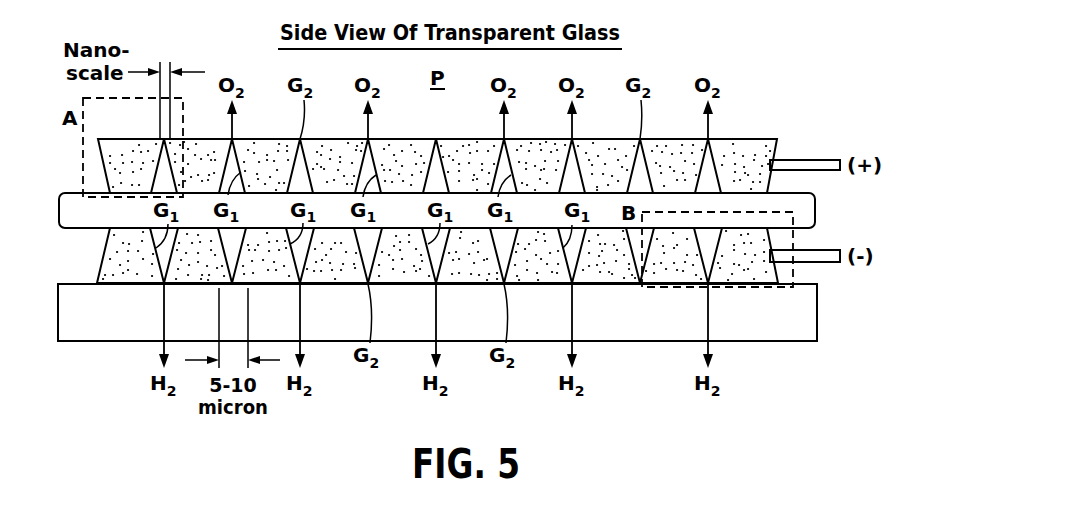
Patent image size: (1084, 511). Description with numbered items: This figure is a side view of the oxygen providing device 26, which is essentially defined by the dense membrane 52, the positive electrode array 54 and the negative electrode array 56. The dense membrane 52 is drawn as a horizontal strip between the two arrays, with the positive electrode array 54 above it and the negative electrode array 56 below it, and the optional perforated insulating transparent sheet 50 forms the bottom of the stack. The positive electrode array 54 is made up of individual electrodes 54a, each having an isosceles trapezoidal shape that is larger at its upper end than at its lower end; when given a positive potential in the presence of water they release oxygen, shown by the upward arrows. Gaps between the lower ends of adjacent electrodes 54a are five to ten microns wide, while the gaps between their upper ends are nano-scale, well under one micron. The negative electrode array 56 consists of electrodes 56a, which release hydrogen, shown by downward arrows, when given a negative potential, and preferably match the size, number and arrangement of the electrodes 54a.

The oxygen providing device 26 is at (742, 70).
The perforated insulating transparent sheet 50 is at (768, 315).
The dense membrane 52 is at (85, 213).
The positive electrode array 54 is at (403, 150).
The electrode 54a is at (127, 156).
The negative electrode array 56 is at (406, 275).
The electrode 56a is at (124, 263).